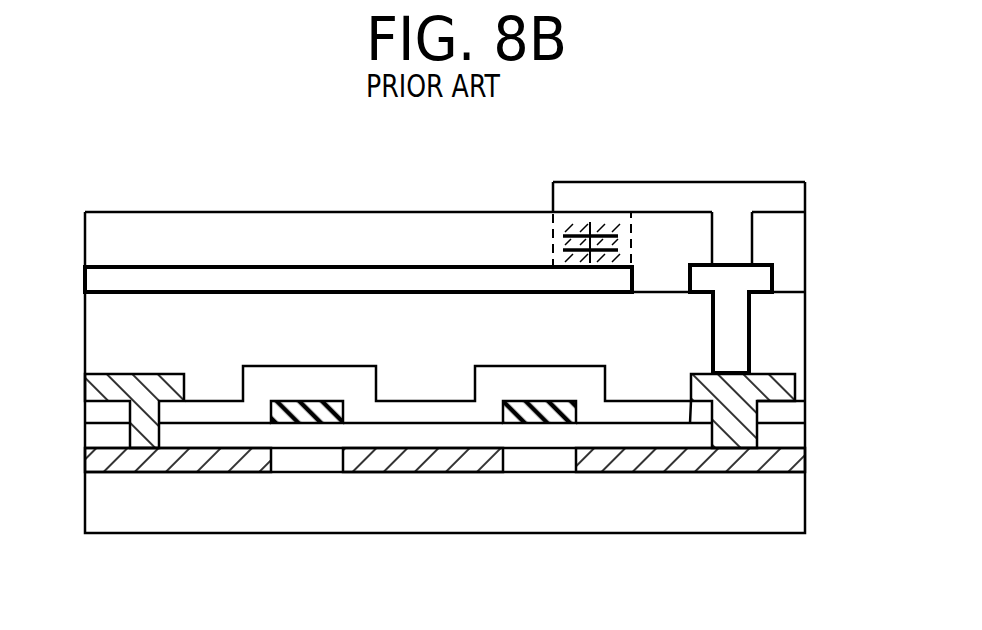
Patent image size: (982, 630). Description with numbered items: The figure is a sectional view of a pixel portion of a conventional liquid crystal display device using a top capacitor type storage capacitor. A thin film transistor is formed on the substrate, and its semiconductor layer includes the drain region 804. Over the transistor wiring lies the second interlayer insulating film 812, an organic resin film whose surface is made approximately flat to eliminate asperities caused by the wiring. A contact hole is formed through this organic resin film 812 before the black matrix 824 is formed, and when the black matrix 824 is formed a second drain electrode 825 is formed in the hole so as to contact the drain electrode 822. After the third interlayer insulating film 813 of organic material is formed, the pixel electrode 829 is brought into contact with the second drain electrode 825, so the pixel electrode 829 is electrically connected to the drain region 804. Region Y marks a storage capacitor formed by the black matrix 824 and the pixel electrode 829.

The drain region 804 is at (727, 473).
The second interlayer insulating film 812 is at (155, 304).
The third interlayer insulating film 813 is at (388, 226).
The drain electrode 822 is at (770, 392).
The black matrix 824 is at (269, 281).
The second drain electrode 825 is at (735, 334).
The pixel electrode 829 is at (735, 205).
The region Y is at (575, 225).